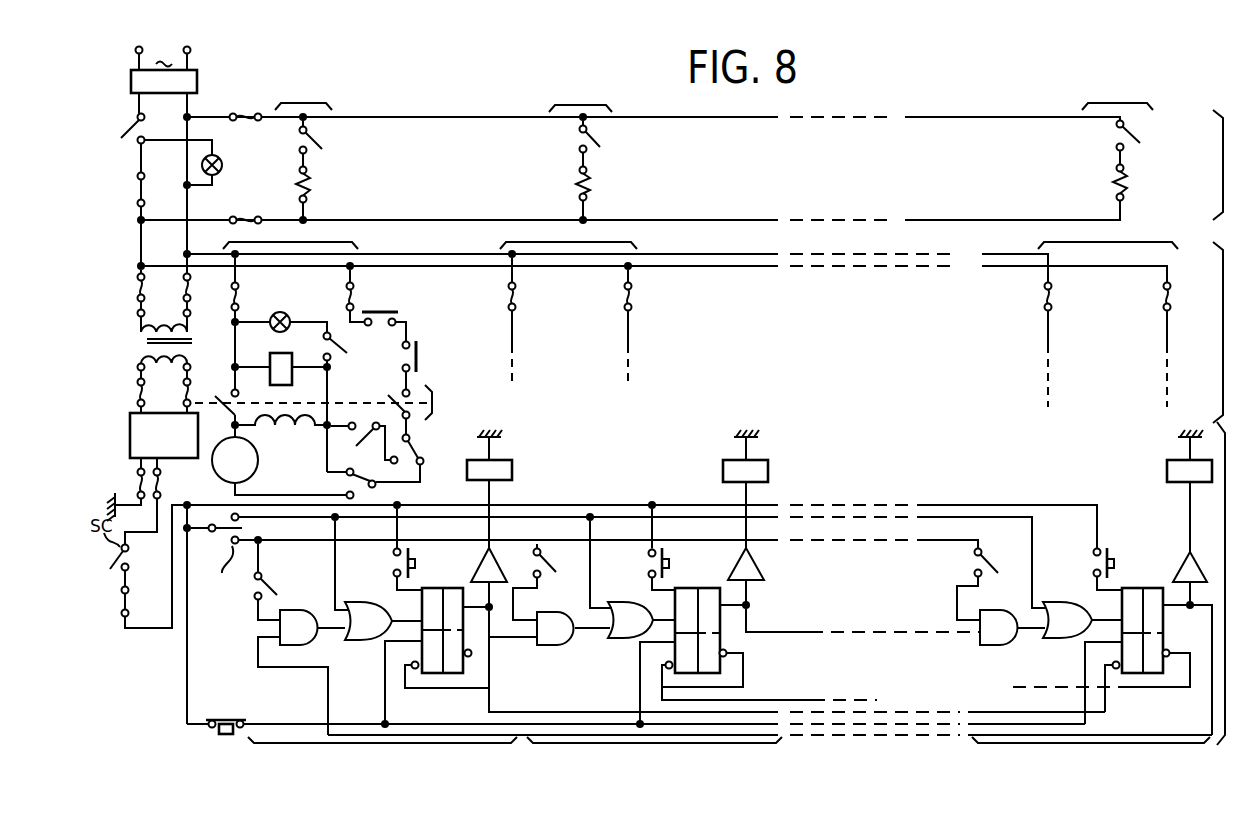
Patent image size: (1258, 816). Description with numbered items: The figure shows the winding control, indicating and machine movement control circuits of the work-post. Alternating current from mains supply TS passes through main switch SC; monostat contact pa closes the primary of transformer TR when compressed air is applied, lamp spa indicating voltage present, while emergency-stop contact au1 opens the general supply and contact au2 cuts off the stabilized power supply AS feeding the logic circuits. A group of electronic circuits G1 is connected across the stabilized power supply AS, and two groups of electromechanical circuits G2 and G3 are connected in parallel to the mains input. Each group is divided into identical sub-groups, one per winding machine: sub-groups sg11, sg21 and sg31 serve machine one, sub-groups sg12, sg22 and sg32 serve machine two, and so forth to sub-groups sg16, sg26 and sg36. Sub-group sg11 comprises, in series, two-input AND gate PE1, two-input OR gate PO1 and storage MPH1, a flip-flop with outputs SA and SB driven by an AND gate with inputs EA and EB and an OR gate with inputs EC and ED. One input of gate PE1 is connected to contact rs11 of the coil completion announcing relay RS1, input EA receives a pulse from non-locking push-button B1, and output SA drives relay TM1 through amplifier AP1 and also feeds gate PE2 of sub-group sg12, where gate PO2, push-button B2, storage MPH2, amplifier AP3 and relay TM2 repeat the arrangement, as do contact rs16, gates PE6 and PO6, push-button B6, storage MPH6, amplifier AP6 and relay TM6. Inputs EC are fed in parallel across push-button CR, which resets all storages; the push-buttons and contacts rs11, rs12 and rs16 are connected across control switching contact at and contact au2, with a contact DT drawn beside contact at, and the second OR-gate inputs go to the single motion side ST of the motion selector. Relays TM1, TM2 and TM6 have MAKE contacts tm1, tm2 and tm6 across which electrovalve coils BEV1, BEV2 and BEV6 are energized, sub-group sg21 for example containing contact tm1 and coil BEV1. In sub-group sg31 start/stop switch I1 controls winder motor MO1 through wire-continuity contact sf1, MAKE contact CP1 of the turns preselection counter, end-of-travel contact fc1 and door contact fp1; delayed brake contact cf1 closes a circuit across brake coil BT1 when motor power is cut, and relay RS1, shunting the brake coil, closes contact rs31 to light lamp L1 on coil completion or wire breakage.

The mains supply TS is at (163, 56).
The main switch SC is at (197, 81).
The monostat contact pa is at (123, 130).
The emergency stop contact au1 is at (146, 195).
The indicating lamp spa is at (220, 157).
The sub-group sg21 is at (303, 93).
The MAKE contact tm1 is at (324, 149).
The electrovalve coil BEV1 is at (311, 186).
The sub-group sg22 is at (580, 94).
The MAKE contact tm2 is at (604, 147).
The electrovalve coil BEV2 is at (592, 185).
The sub-group sg26 is at (1117, 93).
The MAKE contact tm6 is at (1116, 127).
The electrovalve coil BEV6 is at (1128, 172).
The group of electromechanical circuits G2 is at (1234, 165).
The group of electromechanical circuits G3 is at (1234, 332).
The group of electronic circuits G1 is at (1237, 583).
The sub-group sg31 is at (290, 234).
The sub-group sg32 is at (568, 234).
The sub-group sg36 is at (1108, 234).
The lamp L1 is at (291, 313).
The coil completion announcing relay RS1 is at (272, 367).
The relay contact rs31 is at (346, 350).
The door contact fp1 is at (380, 308).
The end-of-travel contact fc1 is at (418, 336).
The start/stop switch I1 is at (422, 410).
The preselection counter MAKE contact CP1 is at (423, 447).
The wire continuity test contact sf1 is at (375, 492).
The motor brake microswitch contact cf1 is at (362, 423).
The winder motor MO1 is at (283, 464).
The coil BT1 is at (287, 436).
The transformer TR is at (131, 346).
The stabilized power supply AS is at (164, 435).
The emergency stop contact au2 is at (131, 605).
The single motion side of motion selector ST is at (232, 517).
The control switching contact at is at (245, 538).
The contact DT is at (214, 570).
The relay contact rs11 is at (266, 574).
The two-input AND gate PE1 is at (290, 609).
The two-input OR gate PO1 is at (366, 601).
The non-locking push-button B1 is at (416, 563).
The storage MPH1 is at (467, 653).
The AND gate input EA is at (409, 589).
The AND gate input EB is at (407, 614).
The OR gate input EC is at (403, 676).
The OR gate input ED is at (444, 669).
The storage output SA is at (476, 599).
The storage output SB is at (477, 662).
The amplifier AP1 is at (495, 563).
The relay TM1 is at (513, 470).
The relay contact rs12 is at (548, 560).
The AND gate PE2 is at (566, 645).
The OR gate PO2 is at (627, 601).
The movement control push-button B2 is at (670, 562).
The storage MPH2 is at (737, 641).
The amplifier AP3 is at (758, 565).
The relay TM2 is at (768, 472).
The relay contact rs16 is at (990, 566).
The AND gate PE6 is at (990, 645).
The OR gate PO6 is at (1062, 601).
The movement control push-button B6 is at (1116, 563).
The storage MPH6 is at (1064, 664).
The amplifier AP6 is at (1182, 552).
The relay TM6 is at (1167, 470).
The re-entry push-button CR is at (222, 735).
The sub-group sg11 is at (382, 752).
The sub-group sg12 is at (654, 752).
The sub-group sg16 is at (1091, 753).